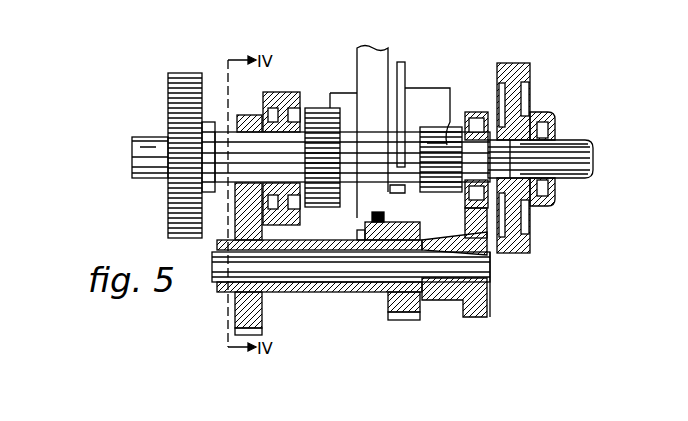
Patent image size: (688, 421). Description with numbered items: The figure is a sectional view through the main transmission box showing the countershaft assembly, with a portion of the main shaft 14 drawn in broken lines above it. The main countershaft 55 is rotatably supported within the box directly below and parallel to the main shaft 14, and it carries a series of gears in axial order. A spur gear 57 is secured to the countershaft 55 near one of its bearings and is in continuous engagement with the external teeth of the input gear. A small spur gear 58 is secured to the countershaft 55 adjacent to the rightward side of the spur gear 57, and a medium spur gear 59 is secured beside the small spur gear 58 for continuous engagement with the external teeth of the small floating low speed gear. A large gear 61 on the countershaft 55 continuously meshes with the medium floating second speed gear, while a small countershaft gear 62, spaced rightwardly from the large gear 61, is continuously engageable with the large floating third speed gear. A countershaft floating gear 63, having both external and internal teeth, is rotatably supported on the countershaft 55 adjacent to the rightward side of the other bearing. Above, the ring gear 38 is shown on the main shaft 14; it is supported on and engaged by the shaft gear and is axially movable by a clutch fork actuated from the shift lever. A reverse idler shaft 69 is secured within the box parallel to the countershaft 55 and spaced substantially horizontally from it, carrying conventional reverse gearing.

The main shaft 14 is at (420, 100).
The ring gear 38 is at (367, 62).
The main countershaft 55 is at (138, 140).
The spur gear 57 is at (172, 207).
The small spur gear 58 is at (250, 114).
The medium spur gear 59 is at (283, 100).
The large gear 61 is at (322, 140).
The small countershaft gear 62 is at (450, 138).
The countershaft floating gear 63 is at (532, 112).
The reverse idler shaft 69 is at (301, 270).